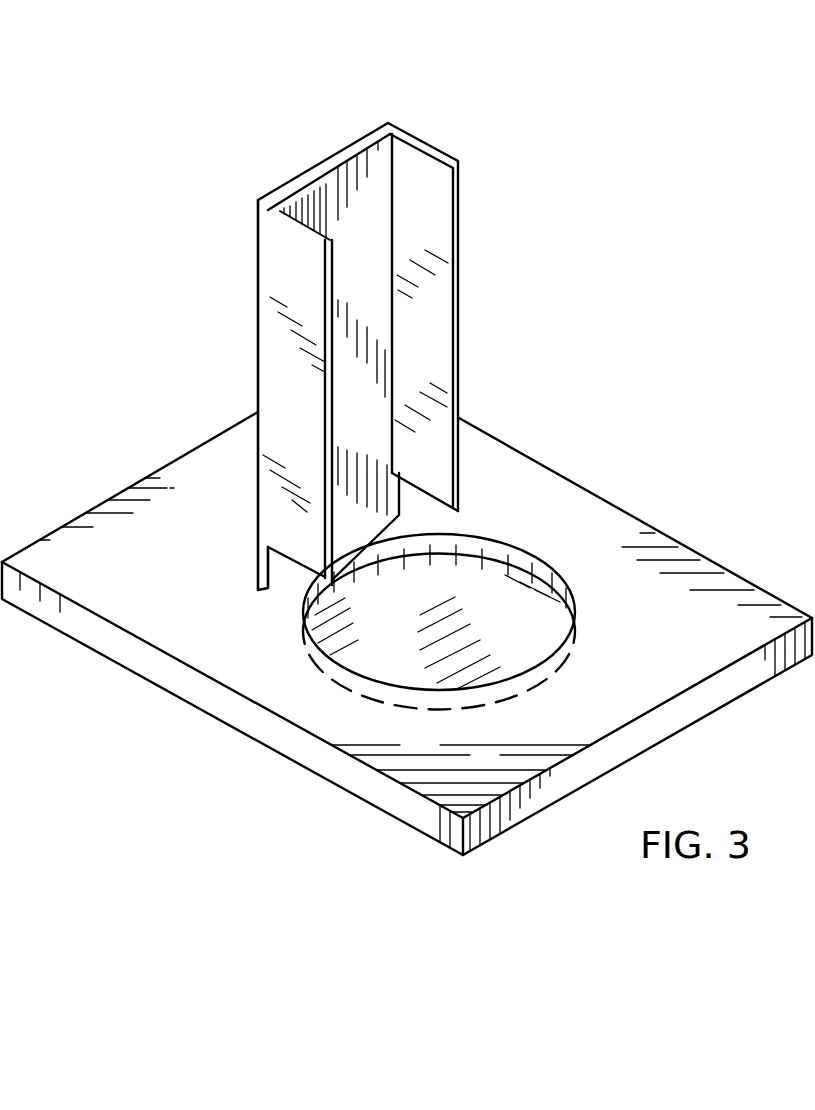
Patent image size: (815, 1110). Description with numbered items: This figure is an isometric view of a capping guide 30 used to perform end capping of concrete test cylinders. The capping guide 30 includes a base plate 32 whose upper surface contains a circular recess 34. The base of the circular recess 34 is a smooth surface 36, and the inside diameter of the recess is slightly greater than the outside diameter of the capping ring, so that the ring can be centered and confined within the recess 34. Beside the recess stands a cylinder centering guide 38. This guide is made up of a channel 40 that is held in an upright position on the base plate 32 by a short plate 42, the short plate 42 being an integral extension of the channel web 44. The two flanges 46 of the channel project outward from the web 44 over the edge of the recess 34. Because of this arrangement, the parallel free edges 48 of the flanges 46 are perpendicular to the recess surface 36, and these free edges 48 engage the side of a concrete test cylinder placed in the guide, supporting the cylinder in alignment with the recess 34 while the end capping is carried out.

The capping guide 30 is at (658, 338).
The base plate 32 is at (716, 549).
The circular recess 34 is at (536, 563).
The smooth surface 36 is at (530, 650).
The cylinder centering guide 38 is at (490, 166).
The channel 40 is at (428, 127).
The short plate 42 is at (248, 570).
The channel web 44 is at (360, 142).
The flanges 46 is at (263, 272).
The free edges 48 is at (327, 367).